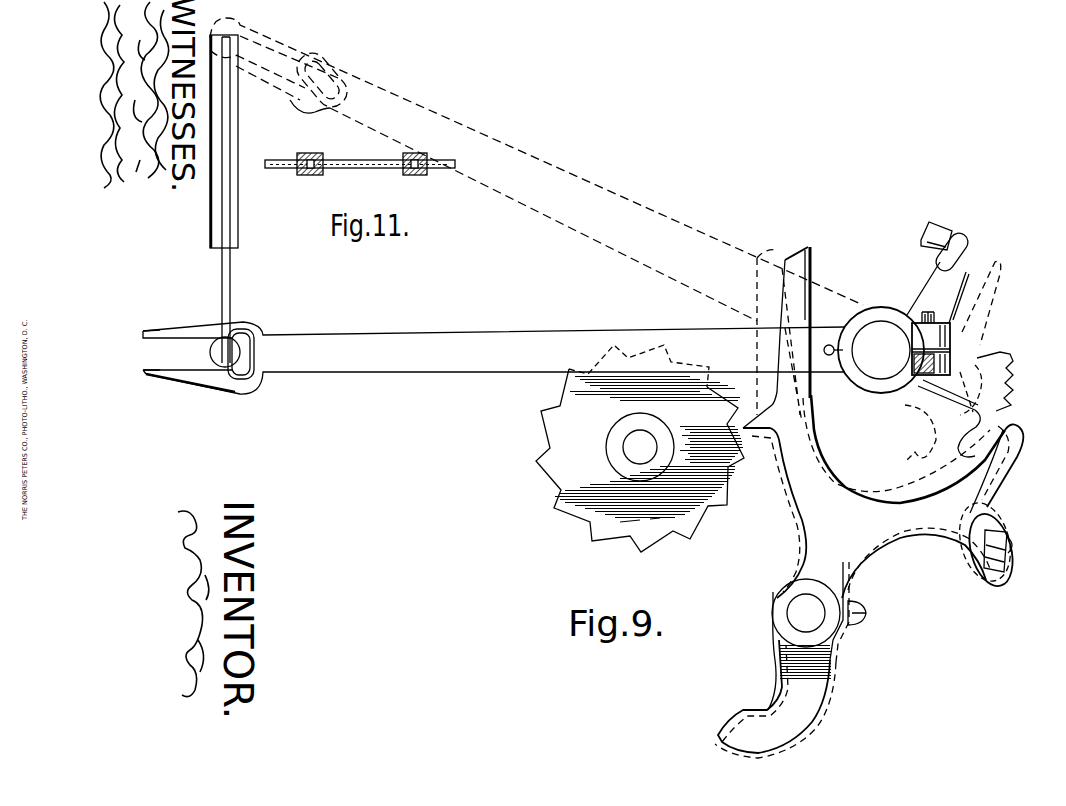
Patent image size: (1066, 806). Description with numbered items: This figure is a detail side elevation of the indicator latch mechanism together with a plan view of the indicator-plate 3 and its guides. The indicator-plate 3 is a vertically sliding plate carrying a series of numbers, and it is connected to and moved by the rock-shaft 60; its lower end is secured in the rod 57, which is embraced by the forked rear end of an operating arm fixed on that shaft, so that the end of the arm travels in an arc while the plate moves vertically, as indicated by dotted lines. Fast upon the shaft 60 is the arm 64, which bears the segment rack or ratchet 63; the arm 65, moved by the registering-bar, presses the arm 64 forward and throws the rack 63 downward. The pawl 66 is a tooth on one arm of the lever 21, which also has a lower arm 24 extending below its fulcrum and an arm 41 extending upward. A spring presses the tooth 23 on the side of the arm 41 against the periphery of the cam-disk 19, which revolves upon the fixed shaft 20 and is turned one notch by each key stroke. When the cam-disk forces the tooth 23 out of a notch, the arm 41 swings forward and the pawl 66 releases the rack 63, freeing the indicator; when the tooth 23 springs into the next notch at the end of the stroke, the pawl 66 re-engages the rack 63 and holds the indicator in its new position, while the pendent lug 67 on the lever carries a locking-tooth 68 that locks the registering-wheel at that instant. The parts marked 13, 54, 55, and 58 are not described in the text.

In FIG. 11, the indicator-plate 3 is at (280, 168).
In FIG. 9, the rod 13 is at (226, 272).
In FIG. 9, the cam-disk 19 is at (640, 448).
In FIG. 9, the fixed shaft 20 is at (640, 447).
In FIG. 9, the lever 21 is at (874, 528).
In FIG. 9, the tooth 23 is at (748, 428).
In FIG. 9, the lower arm 24 is at (790, 668).
In FIG. 9, the upward arm 41 is at (812, 260).
In FIG. 9, the lever 54 is at (494, 358).
In FIG. 11, the collars 55 is at (405, 156).
In FIG. 9, the collars 55 is at (211, 232).
In FIG. 9, the rod 57 is at (210, 352).
In FIG. 9, the fork 58 is at (150, 336).
In FIG. 9, the rock-shaft 60 is at (887, 350).
In FIG. 9, the segment rack 63 is at (959, 361).
In FIG. 9, the arm 64 is at (939, 276).
In FIG. 9, the arm 65 is at (921, 247).
In FIG. 9, the pawl 66 is at (1020, 446).
In FIG. 9, the pendent lug 67 is at (1010, 580).
In FIG. 9, the locking-tooth 68 is at (1010, 560).